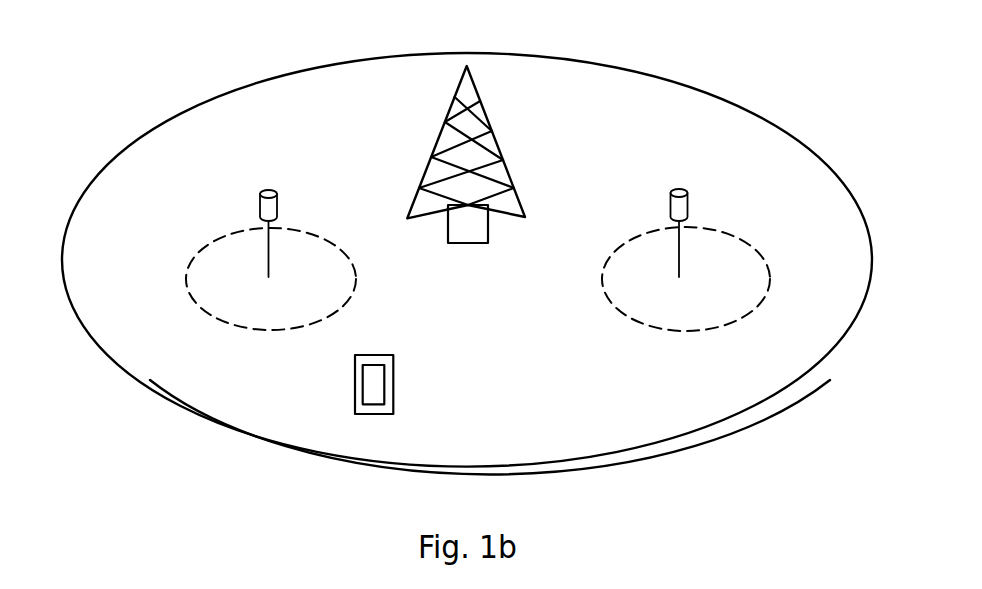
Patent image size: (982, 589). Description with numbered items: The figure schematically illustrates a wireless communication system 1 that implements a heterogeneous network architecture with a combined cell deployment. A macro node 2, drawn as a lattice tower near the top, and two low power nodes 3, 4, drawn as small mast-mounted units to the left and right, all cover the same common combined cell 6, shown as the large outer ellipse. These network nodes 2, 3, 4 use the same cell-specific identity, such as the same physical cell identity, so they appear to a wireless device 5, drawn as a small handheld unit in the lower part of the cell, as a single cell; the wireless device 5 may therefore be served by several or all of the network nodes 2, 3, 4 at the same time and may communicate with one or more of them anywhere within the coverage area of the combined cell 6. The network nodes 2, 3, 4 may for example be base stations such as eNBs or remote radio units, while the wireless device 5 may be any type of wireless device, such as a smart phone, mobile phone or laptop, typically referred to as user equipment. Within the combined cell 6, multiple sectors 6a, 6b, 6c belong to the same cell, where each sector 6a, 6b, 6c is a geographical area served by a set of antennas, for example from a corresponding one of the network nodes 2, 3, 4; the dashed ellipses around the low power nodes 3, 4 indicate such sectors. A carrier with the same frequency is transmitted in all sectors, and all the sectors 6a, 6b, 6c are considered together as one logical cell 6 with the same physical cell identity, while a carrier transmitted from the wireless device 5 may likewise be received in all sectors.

The wireless communication system 1 is at (727, 80).
The macro node 2 is at (487, 143).
The low power node 3 is at (277, 201).
The low power node 4 is at (687, 201).
The wireless device 5 is at (390, 408).
The combined cell 6 is at (300, 450).
The sector 6a is at (733, 400).
The sector 6b is at (733, 265).
The sector 6c is at (320, 300).